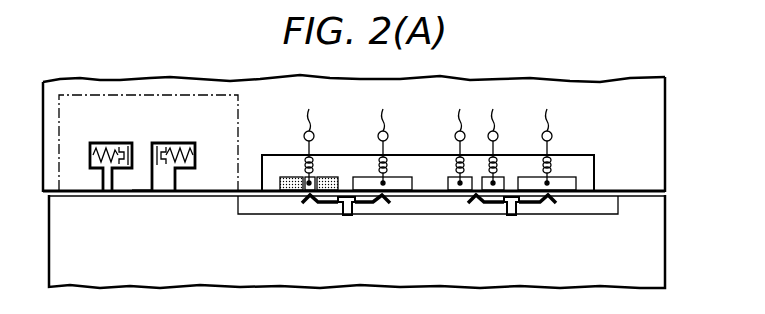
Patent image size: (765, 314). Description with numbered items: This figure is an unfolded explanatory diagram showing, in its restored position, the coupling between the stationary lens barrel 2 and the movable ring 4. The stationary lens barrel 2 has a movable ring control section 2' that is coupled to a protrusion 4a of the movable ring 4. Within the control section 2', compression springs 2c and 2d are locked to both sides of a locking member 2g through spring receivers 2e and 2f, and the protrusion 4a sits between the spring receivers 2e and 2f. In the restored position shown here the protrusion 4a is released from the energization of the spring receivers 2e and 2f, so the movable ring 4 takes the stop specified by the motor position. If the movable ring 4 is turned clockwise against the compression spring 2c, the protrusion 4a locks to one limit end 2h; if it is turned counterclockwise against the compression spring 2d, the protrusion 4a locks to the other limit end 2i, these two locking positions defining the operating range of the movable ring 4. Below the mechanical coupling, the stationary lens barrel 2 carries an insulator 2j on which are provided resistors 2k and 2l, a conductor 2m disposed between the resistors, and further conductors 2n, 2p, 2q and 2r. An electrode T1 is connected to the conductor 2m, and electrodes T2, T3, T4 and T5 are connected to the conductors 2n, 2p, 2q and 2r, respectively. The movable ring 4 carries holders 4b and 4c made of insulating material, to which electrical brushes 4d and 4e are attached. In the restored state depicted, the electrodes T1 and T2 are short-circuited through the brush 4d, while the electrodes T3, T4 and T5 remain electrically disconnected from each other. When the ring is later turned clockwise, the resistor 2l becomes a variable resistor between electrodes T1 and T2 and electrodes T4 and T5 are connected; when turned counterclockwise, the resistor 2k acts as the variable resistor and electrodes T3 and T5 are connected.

The stationary lens barrel 2 is at (370, 133).
The movable ring control section 2' is at (148, 107).
The movable ring 4 is at (665, 250).
The compression spring 2c is at (195, 157).
The compression spring 2d is at (93, 157).
The spring receiver 2e is at (158, 160).
The spring receiver 2f is at (133, 143).
The locking member 2g is at (147, 143).
The limit end 2h is at (193, 183).
The limit end 2i is at (94, 182).
The insulator 2j is at (583, 167).
The resistor 2k is at (292, 190).
The resistor 2l is at (333, 177).
The conductor 2m is at (310, 182).
The conductor 2n is at (402, 190).
The conductor 2p is at (457, 190).
The conductor 2q is at (492, 190).
The conductor 2r is at (570, 190).
The protrusion 4a is at (140, 170).
The holder 4b is at (347, 215).
The holder 4c is at (511, 215).
The electrical brush 4d is at (325, 208).
The electrical brush 4e is at (528, 207).
The electrode T1 is at (312, 137).
The electrode T2 is at (386, 137).
The electrode T3 is at (463, 137).
The electrode T4 is at (496, 137).
The electrode T5 is at (550, 137).